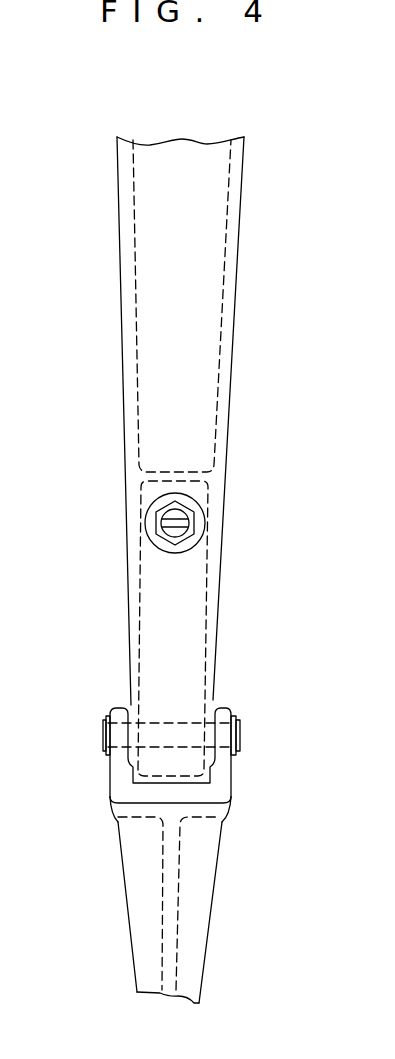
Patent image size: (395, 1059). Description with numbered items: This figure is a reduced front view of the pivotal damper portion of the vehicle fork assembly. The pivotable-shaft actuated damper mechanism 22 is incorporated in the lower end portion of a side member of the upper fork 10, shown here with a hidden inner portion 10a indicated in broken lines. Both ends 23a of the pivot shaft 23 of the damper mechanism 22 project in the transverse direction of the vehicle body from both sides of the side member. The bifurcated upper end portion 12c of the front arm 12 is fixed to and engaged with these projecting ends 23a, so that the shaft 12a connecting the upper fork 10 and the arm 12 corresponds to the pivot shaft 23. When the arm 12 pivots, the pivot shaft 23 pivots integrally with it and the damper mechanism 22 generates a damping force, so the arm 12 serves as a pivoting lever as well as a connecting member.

The upper fork 10 is at (243, 162).
The hidden inner portion of upper arm 10a is at (128, 258).
The pivotable-shaft actuated damper mechanism 22 is at (209, 591).
The shaft 12a is at (178, 722).
The pivot shaft 23 is at (225, 705).
The ends of pivot shaft 23a is at (103, 734).
The bifurcated upper end portion 12c is at (231, 793).
The front arm 12 is at (195, 923).